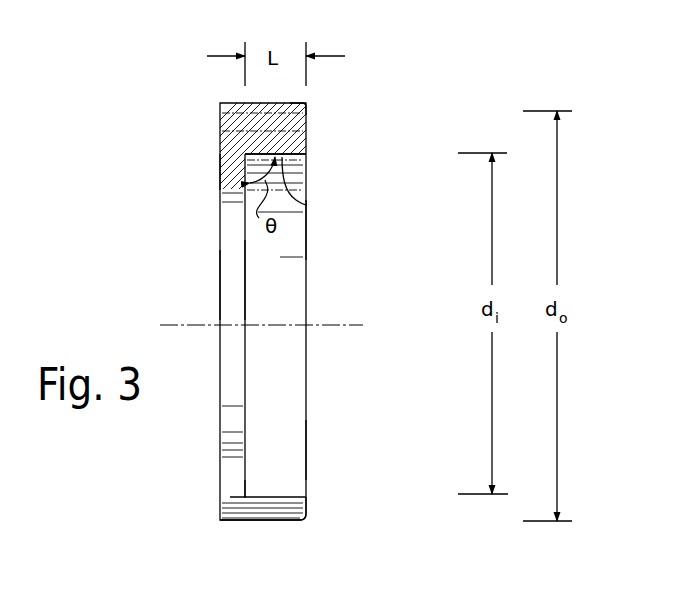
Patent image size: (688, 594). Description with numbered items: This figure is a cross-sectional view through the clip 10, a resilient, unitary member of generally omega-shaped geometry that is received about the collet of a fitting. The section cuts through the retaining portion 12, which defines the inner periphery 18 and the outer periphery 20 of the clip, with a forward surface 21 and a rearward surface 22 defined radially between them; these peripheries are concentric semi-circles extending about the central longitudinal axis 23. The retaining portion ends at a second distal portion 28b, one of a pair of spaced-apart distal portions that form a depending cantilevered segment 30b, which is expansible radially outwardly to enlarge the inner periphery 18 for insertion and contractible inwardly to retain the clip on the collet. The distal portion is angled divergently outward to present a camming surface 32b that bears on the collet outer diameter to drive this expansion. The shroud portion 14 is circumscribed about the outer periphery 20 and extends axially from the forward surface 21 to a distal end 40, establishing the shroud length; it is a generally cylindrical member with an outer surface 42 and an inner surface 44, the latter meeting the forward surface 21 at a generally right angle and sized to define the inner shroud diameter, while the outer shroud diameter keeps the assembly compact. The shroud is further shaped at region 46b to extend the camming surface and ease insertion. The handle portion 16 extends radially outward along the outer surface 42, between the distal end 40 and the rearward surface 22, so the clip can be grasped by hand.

The clip 10 is at (442, 72).
The retaining portion 12 is at (220, 178).
The shroud portion 14 is at (307, 163).
The handle portion 16 is at (298, 99).
The inner periphery 18 is at (237, 458).
The outer periphery 20 is at (238, 523).
The forward surface 21 is at (247, 276).
The rearward surface 22 is at (220, 283).
The central longitudinal axis 23 is at (344, 323).
The second distal portion 28b is at (307, 502).
The cantilevered segment 30b is at (307, 450).
The camming surface 32b is at (230, 495).
The distal end 40 is at (307, 233).
The outer surface 42 is at (245, 132).
The inner surface 44 is at (307, 205).
The shroud extension of camming surface 46b is at (280, 510).